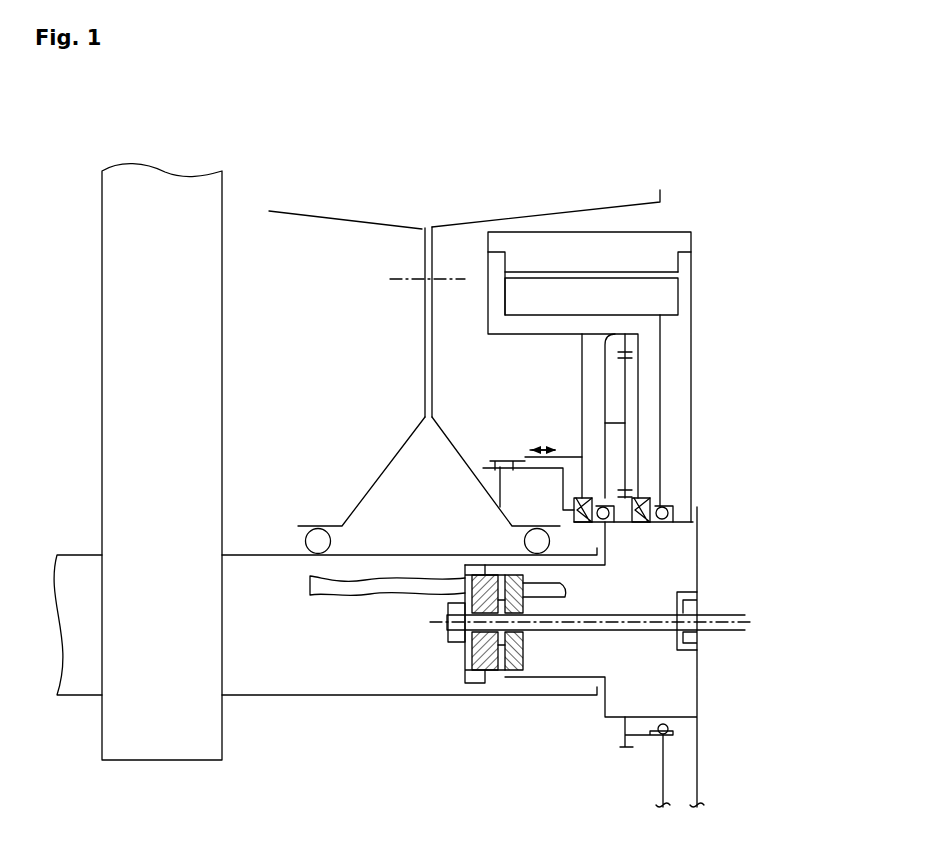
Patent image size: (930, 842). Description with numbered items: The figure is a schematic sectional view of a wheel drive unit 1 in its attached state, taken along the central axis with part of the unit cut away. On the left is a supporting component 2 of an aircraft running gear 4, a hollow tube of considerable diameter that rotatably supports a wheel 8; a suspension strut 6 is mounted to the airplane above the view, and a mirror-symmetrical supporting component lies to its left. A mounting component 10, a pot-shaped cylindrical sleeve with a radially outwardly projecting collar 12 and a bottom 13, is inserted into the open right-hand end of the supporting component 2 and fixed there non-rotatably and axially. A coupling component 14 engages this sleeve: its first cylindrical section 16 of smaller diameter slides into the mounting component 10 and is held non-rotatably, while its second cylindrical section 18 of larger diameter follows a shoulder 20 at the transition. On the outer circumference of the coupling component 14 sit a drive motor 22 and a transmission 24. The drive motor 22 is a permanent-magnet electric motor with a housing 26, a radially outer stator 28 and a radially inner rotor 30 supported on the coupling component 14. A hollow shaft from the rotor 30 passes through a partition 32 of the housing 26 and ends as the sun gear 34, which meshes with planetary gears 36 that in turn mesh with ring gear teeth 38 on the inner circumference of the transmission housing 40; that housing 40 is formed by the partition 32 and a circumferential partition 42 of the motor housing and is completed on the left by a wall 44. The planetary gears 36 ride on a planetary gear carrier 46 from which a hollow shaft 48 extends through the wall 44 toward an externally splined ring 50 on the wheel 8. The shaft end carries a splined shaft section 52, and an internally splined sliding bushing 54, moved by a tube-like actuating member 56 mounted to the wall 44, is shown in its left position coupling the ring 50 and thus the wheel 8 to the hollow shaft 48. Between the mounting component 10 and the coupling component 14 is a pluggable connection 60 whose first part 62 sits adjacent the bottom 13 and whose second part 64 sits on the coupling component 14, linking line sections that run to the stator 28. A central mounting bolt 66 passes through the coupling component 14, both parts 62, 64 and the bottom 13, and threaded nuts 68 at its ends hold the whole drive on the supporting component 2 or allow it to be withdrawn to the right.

The filling device 1 is at (683, 223).
The supporting component 2 is at (310, 683).
The aircraft running gear 4 is at (240, 333).
The suspension strut 6 is at (222, 438).
The wheel 8 is at (425, 334).
The mounting component 10 is at (543, 692).
The collar 12 is at (600, 685).
The bottom 13 is at (468, 672).
The coupling component 14 is at (702, 540).
The first cylindrical section 16 is at (580, 668).
The second cylindrical section 18 is at (703, 558).
The shoulder 20 is at (607, 545).
The drive motor 22 is at (670, 403).
The transmission 24 is at (607, 413).
The housing 26 is at (692, 277).
The stator 28 is at (662, 248).
The rotor 30 is at (662, 304).
The partition 32 is at (640, 433).
The sun gear 34 is at (620, 752).
The planetary gears 36 is at (627, 375).
The ring gear teeth 38 is at (640, 337).
The housing 40 is at (580, 391).
The circumferential partition 42 is at (582, 349).
The wall 44 is at (582, 373).
The planetary gear carrier 46 is at (610, 462).
The hollow shaft 48 is at (563, 487).
The ring 50 is at (500, 485).
The splined shaft section 52 is at (517, 482).
The sliding bushing 54 is at (490, 461).
The actuating member 56 is at (515, 460).
The pluggable connection 60 is at (497, 686).
The first part 62 is at (468, 650).
The second part 64 is at (523, 650).
The mounting bolt 66 is at (703, 611).
The threaded nuts 68 is at (703, 636).